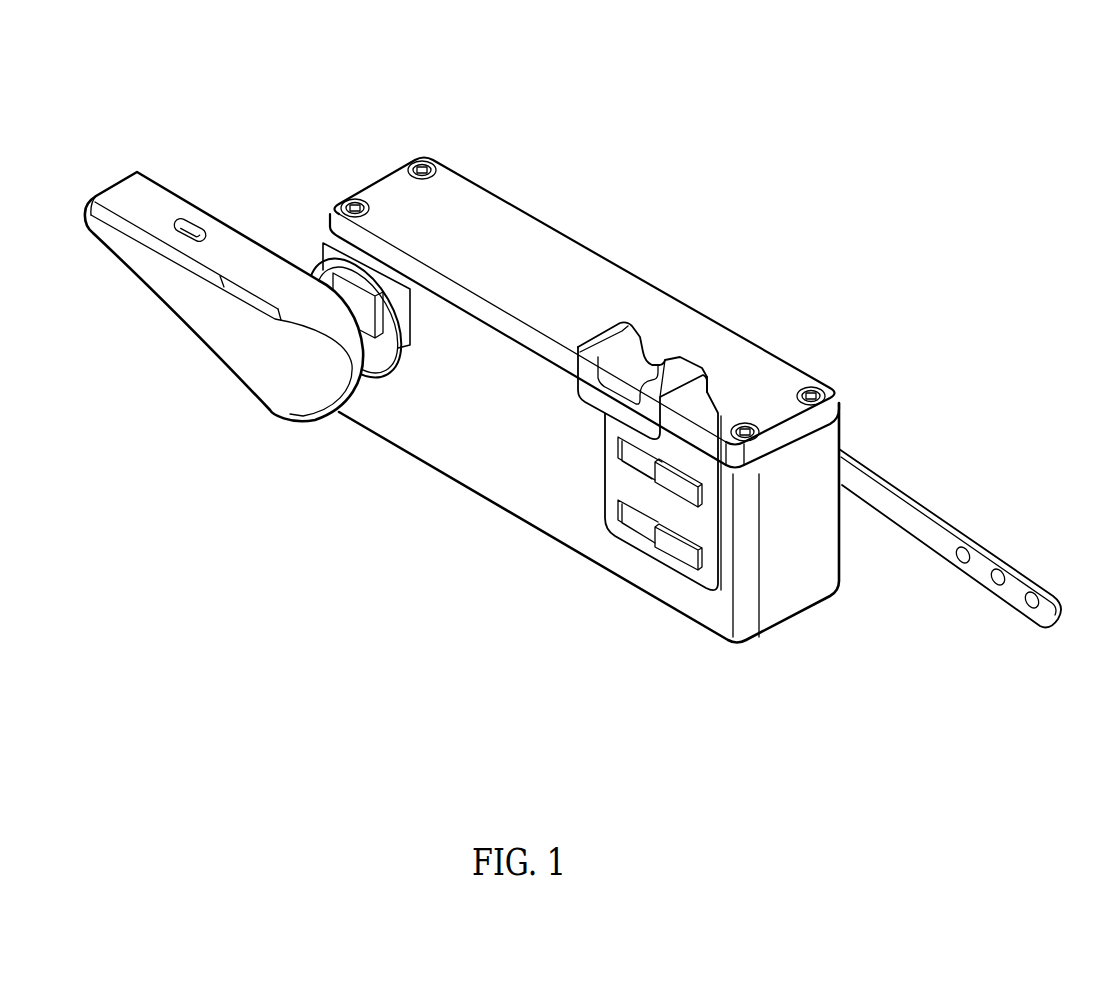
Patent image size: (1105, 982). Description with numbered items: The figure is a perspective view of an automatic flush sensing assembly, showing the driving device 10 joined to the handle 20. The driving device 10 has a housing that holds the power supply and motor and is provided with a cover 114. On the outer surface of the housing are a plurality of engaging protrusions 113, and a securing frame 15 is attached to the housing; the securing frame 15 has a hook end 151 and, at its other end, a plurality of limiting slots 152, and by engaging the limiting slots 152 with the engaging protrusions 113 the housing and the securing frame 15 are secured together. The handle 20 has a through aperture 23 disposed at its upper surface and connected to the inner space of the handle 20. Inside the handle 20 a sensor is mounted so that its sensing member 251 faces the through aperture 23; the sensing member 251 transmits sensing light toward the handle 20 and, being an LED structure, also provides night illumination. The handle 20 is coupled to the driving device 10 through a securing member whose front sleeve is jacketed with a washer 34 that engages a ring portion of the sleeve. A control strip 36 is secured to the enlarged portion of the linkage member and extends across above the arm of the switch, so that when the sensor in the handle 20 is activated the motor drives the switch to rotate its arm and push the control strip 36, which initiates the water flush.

The driving device 10 is at (826, 612).
The cover 114 is at (607, 277).
The engaging protrusions 113 is at (675, 550).
The securing frame 15 is at (703, 423).
The hook end 151 is at (657, 380).
The limiting slots 152 is at (632, 527).
The handle 20 is at (203, 353).
The through aperture 23 is at (180, 228).
The sensing member 251 is at (189, 226).
The washer 34 is at (363, 277).
The control strip 36 is at (880, 492).